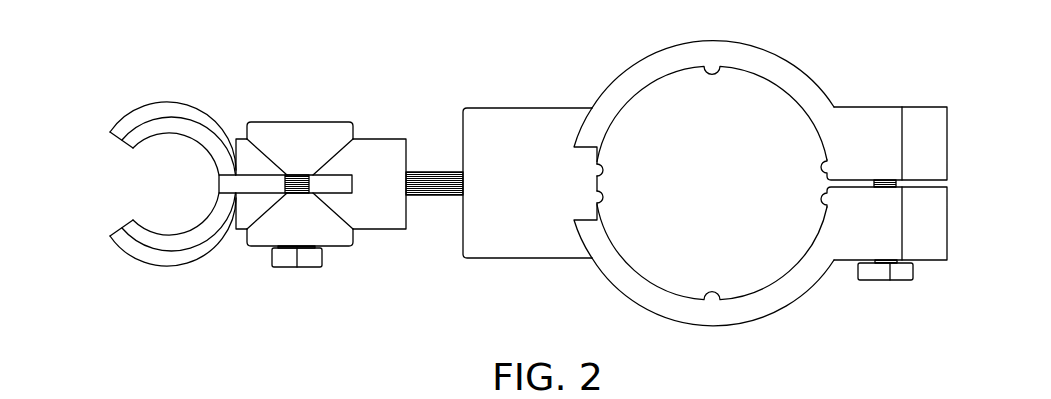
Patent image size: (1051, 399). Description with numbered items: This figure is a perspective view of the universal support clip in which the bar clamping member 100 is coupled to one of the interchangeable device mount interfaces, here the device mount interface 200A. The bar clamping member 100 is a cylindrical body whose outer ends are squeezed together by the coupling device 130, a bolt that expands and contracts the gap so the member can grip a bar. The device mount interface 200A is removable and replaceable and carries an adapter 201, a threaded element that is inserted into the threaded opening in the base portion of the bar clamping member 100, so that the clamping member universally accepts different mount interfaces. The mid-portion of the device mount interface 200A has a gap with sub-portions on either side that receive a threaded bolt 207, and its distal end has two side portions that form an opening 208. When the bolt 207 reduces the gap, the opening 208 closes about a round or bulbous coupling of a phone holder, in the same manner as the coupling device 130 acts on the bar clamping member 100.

The bar clamping member 100 is at (918, 57).
The coupling device 130 is at (875, 272).
The device mount interface 200A is at (178, 90).
The adapter 201 is at (437, 173).
The threaded bolt 207 is at (305, 260).
The opening 208 is at (144, 199).